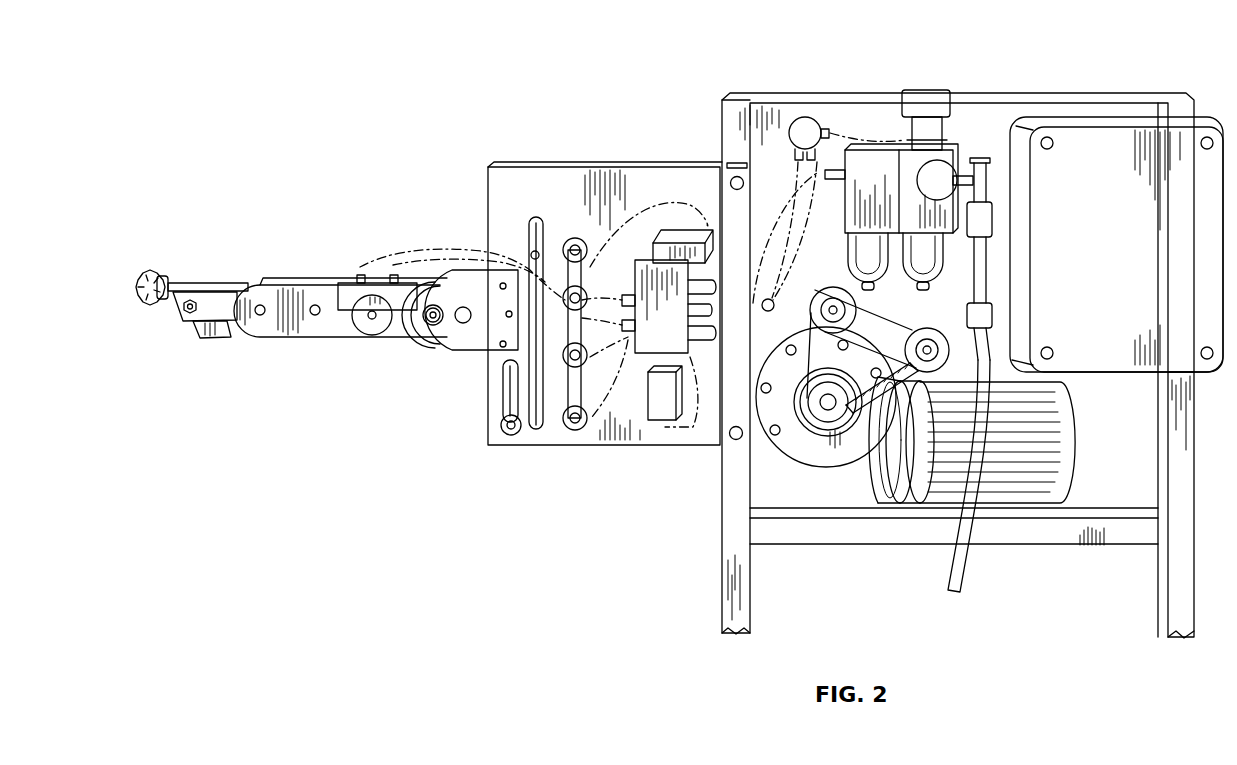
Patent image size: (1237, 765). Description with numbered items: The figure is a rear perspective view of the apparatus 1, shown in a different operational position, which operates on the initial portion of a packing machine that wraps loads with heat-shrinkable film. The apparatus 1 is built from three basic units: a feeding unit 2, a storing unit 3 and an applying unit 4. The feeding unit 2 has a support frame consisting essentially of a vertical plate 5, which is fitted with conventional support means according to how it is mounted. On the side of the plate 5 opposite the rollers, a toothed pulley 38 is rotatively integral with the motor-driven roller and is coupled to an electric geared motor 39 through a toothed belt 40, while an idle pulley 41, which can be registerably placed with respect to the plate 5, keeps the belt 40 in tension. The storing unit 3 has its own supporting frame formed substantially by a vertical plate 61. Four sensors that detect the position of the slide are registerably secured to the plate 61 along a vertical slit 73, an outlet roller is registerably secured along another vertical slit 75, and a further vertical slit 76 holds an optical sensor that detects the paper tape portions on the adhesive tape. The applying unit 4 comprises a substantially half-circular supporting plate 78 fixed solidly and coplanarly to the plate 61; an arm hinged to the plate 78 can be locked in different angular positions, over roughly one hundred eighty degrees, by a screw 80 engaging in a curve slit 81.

The apparatus 1 is at (604, 586).
The feeding unit 2 is at (958, 319).
The storing unit 3 is at (605, 247).
The applying unit 4 is at (291, 252).
The vertical plate 5 is at (1153, 93).
The toothed pulley 38 is at (820, 293).
The electric geared motor 39 is at (1078, 436).
The toothed belt 40 is at (856, 450).
The idle pulley 41 is at (940, 333).
The vertical plate 61 is at (640, 162).
The vertical slit 73 is at (562, 403).
The vertical slit 75 is at (500, 385).
The vertical slit 76 is at (534, 432).
The half-circular supporting plate 78 is at (476, 348).
The screw 80 is at (430, 320).
The curve slit 81 is at (443, 346).